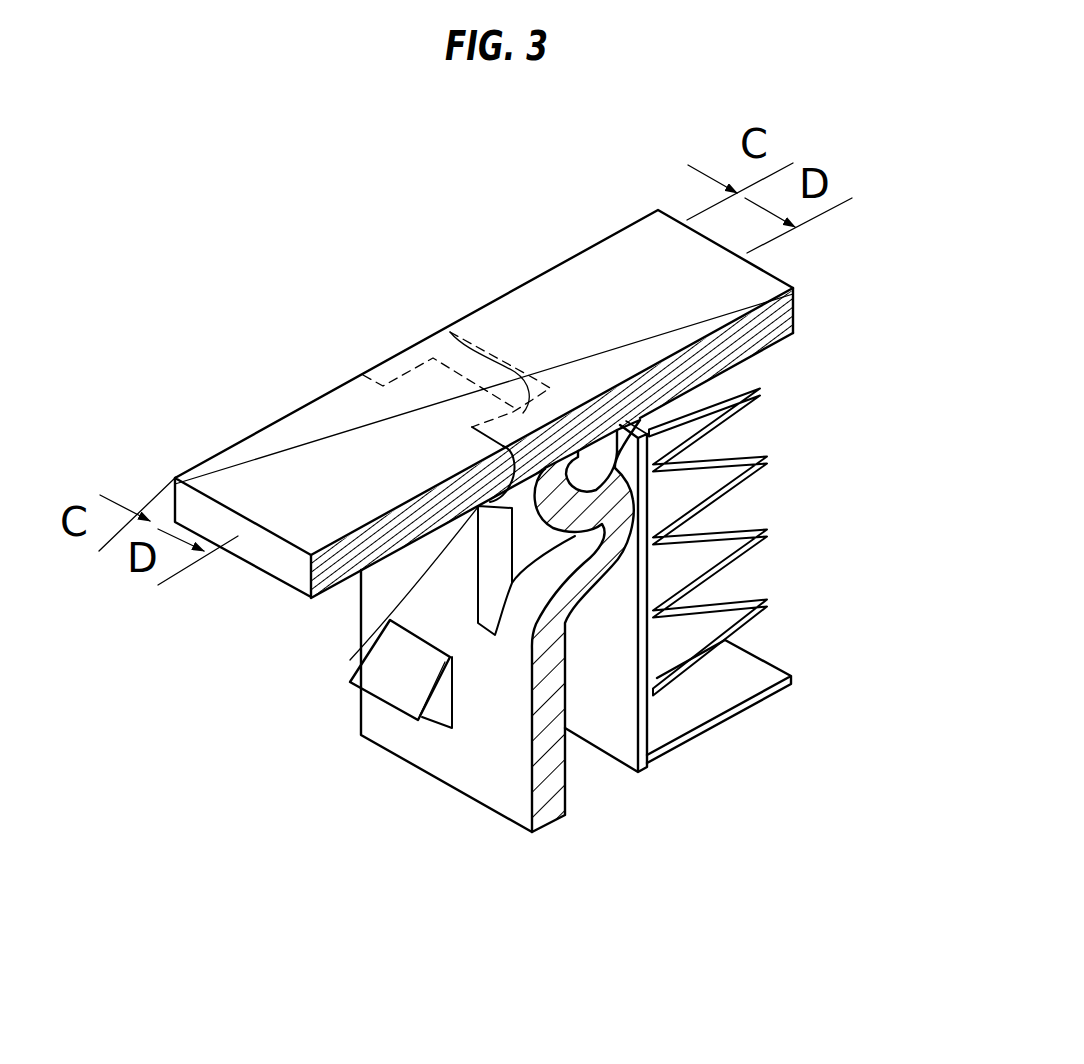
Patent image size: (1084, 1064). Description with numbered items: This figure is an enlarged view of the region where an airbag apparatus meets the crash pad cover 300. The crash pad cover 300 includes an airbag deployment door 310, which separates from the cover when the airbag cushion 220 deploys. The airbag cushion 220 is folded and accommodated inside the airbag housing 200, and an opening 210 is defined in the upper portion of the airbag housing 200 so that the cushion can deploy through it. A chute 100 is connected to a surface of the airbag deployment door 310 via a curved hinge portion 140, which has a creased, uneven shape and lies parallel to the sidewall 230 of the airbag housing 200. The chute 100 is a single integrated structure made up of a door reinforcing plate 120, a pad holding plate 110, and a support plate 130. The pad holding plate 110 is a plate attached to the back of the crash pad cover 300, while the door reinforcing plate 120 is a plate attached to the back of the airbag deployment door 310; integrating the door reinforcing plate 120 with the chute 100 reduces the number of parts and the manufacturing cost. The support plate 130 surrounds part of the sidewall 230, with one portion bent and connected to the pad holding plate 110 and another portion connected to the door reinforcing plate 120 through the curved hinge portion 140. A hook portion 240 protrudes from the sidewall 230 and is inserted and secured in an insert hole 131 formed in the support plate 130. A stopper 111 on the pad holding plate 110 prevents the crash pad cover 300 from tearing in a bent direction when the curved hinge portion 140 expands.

The chute 100 is at (323, 722).
The pad holding plate 110 is at (278, 557).
The stopper 111 is at (463, 374).
The door reinforcing plate 120 is at (793, 328).
The support plate 130 is at (503, 763).
The insert hole 131 is at (444, 711).
The curved hinge portion 140 is at (362, 655).
The airbag housing 200 is at (718, 691).
The opening 210 is at (655, 426).
The airbag cushion 220 is at (740, 580).
The sidewall 230 is at (613, 733).
The hook portion 240 is at (403, 688).
The crash pad cover 300 is at (298, 472).
The airbag deployment door 310 is at (632, 292).